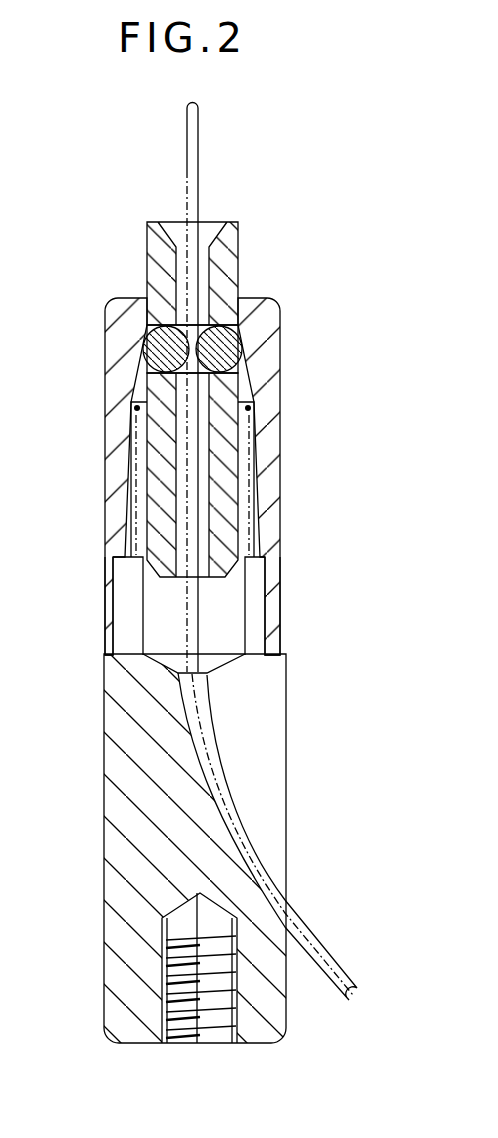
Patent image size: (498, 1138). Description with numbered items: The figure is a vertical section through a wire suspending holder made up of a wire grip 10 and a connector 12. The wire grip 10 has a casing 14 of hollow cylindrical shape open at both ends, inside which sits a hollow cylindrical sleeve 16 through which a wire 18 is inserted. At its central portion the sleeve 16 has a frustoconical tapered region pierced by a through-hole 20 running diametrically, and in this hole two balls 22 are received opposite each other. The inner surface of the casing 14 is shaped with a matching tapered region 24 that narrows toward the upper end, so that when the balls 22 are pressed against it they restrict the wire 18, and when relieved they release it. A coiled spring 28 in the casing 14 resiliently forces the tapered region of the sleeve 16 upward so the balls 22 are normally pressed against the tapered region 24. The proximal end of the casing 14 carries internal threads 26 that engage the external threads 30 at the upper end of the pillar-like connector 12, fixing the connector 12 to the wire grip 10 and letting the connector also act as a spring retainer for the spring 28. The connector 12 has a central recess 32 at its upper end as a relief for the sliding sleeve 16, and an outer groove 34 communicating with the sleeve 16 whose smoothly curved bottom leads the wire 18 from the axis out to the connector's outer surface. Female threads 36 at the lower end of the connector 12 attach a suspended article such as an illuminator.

The wire grip 10 is at (327, 263).
The connector 12 is at (120, 765).
The casing 14 is at (272, 397).
The sleeve 16 is at (228, 272).
The wire 18 is at (199, 158).
The through-hole 20 is at (243, 354).
The balls 22 is at (143, 343).
The tapered region 24 is at (136, 357).
The threads 26 is at (108, 625).
The coiled spring 28 is at (256, 538).
The threads 30 is at (270, 587).
The recess 32 is at (234, 623).
The groove 34 is at (273, 755).
The threads 36 is at (213, 1030).